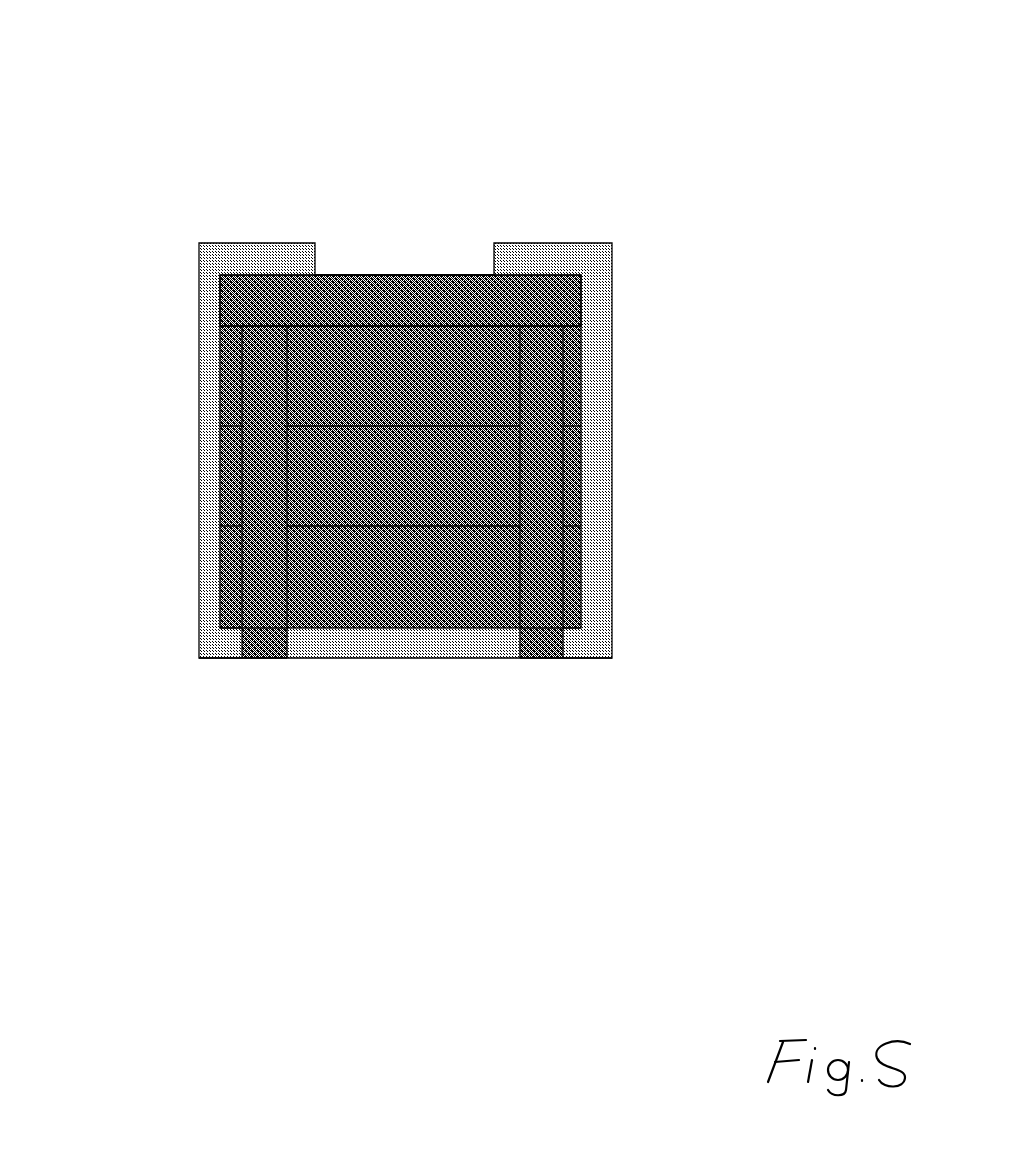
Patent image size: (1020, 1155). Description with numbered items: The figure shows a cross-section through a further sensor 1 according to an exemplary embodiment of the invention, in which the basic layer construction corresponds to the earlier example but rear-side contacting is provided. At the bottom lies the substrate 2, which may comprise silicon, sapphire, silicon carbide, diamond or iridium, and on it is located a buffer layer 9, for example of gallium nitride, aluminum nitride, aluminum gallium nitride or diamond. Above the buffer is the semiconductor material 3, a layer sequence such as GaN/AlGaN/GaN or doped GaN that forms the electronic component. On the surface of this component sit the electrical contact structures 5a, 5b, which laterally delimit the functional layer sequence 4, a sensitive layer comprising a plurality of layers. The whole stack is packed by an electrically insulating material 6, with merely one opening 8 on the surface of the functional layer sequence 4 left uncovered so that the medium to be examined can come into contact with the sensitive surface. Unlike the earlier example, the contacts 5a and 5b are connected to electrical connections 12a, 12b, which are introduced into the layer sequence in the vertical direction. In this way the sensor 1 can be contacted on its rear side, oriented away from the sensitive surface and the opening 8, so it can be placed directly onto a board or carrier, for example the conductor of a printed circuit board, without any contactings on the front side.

The sensor 1 is at (411, 377).
The substrate 2 is at (571, 558).
The semiconductor material 3 is at (568, 380).
The functional layer sequence 4 is at (455, 280).
The electrical contact structure 5a is at (253, 296).
The electrical contact structure 5b is at (547, 293).
The electrically insulating material 6 is at (598, 627).
The opening 8 is at (374, 253).
The buffer layer 9 is at (570, 470).
The electrical connection 12a is at (260, 648).
The electrical connection 12b is at (538, 644).